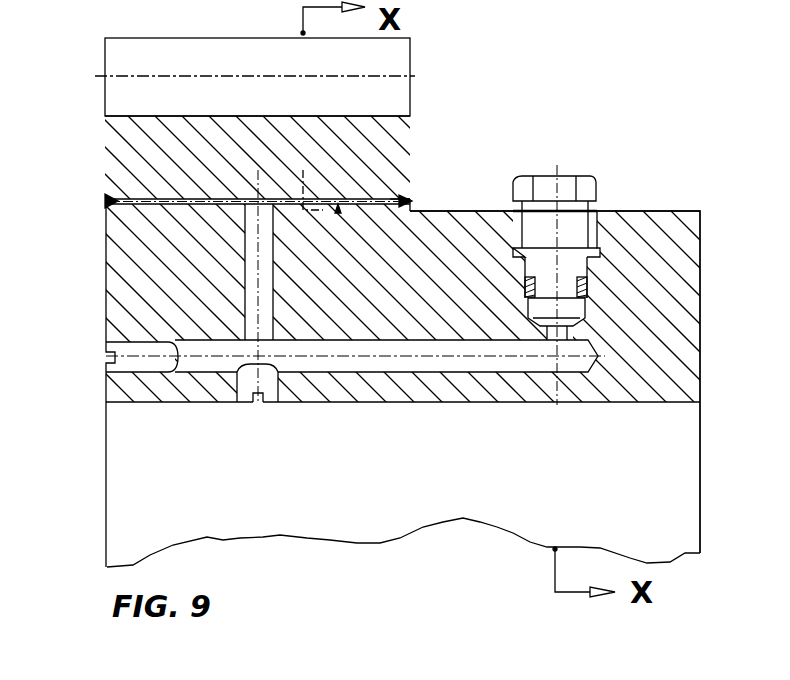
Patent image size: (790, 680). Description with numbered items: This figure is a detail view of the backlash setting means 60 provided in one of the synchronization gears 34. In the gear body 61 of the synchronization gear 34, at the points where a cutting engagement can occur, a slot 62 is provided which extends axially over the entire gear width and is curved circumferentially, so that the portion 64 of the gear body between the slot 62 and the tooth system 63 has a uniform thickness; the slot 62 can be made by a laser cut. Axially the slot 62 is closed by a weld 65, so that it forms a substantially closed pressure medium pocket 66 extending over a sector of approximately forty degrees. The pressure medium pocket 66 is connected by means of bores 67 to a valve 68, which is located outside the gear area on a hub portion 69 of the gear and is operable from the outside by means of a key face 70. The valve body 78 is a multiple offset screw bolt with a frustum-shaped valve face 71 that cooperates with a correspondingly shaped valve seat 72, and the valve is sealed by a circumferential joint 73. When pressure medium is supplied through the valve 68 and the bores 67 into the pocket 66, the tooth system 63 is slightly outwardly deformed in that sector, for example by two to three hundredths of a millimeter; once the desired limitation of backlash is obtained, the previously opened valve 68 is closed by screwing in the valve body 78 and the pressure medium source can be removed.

The synchronization gear 34 is at (115, 248).
The backlash setting means 60 is at (524, 98).
The gear body 61 is at (115, 278).
The slot 62 is at (368, 200).
The tooth system 63 is at (403, 95).
The portion of the gear body 64 is at (127, 148).
The weld 65 is at (98, 202).
The pressure medium pocket 66 is at (418, 204).
The bores 67 is at (263, 320).
The valve 68 is at (622, 291).
The hub portion 69 is at (672, 220).
The key face 70 is at (557, 183).
The frustum-shaped valve face 71 is at (588, 318).
The valve seat 72 is at (540, 330).
The circumferential joint 73 is at (588, 283).
The valve body 78 is at (580, 227).